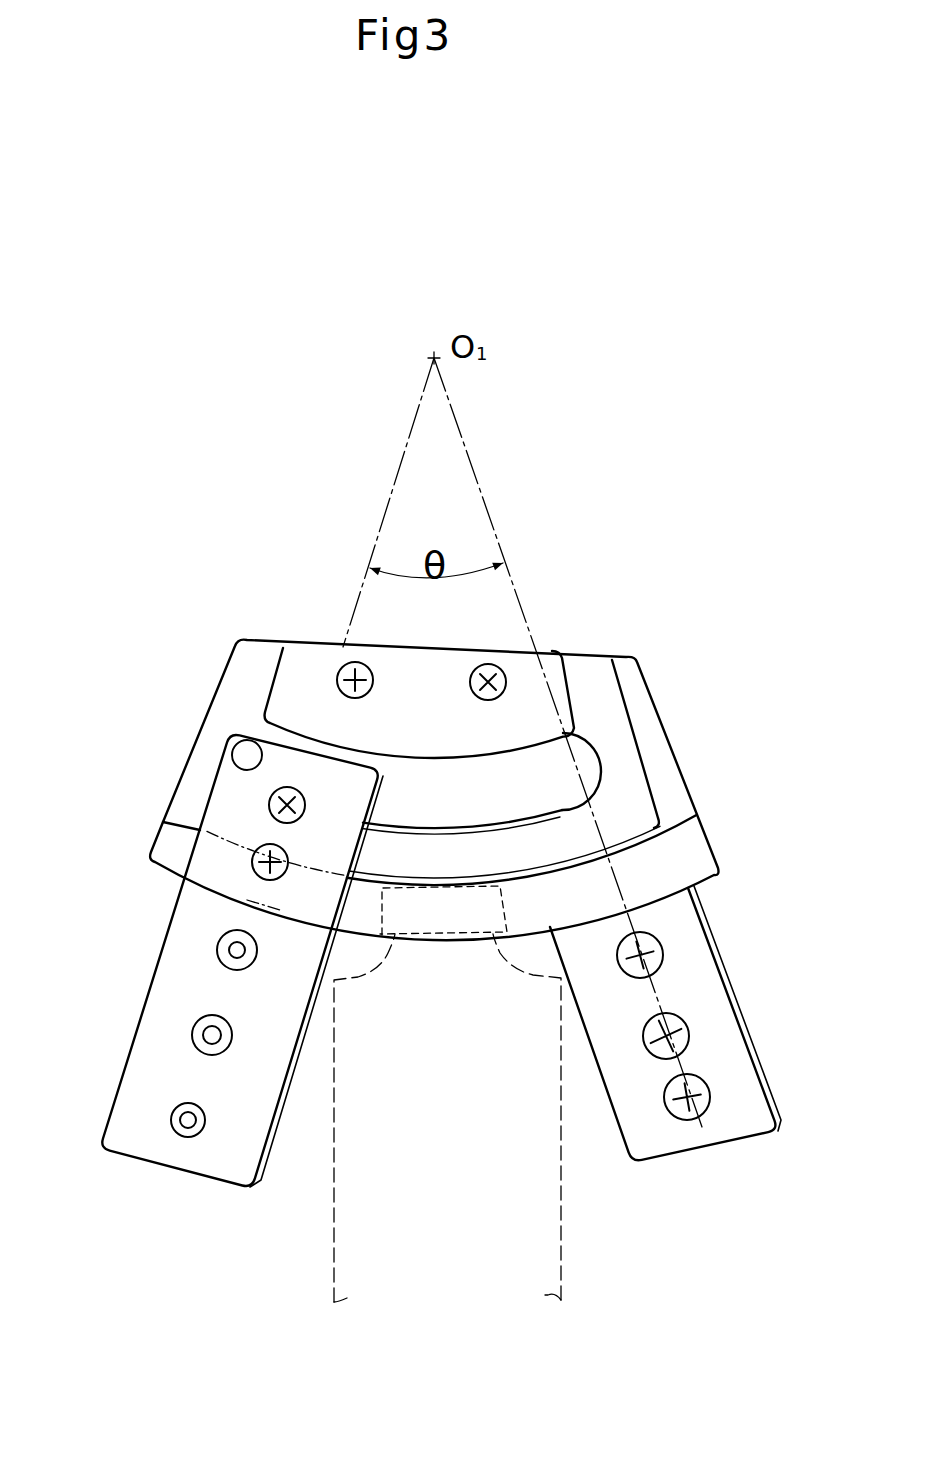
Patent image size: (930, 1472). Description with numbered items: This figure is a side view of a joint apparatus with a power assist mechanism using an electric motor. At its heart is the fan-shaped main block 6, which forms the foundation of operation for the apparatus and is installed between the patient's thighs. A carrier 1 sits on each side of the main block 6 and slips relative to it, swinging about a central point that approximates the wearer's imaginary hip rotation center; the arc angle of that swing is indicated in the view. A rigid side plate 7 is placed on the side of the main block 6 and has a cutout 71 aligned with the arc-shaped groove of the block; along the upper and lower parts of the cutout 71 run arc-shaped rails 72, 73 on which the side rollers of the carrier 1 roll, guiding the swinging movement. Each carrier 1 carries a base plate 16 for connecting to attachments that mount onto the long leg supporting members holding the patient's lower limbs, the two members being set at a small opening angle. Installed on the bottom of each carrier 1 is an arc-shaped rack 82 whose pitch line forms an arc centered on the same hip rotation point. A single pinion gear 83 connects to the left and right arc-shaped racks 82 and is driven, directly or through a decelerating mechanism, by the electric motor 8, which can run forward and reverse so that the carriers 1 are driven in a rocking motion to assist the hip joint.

The carrier 1 is at (222, 672).
The main block 6 is at (573, 645).
The side plate 7 is at (577, 754).
The cutout 71 is at (559, 807).
The arc-shaped rail 72 is at (588, 716).
The arc-shaped rail 73 is at (560, 842).
The electric motor 8 is at (562, 1138).
The arc-shaped rack 82 is at (160, 840).
The pinion gear 83 is at (500, 893).
The base plate 16 is at (155, 973).